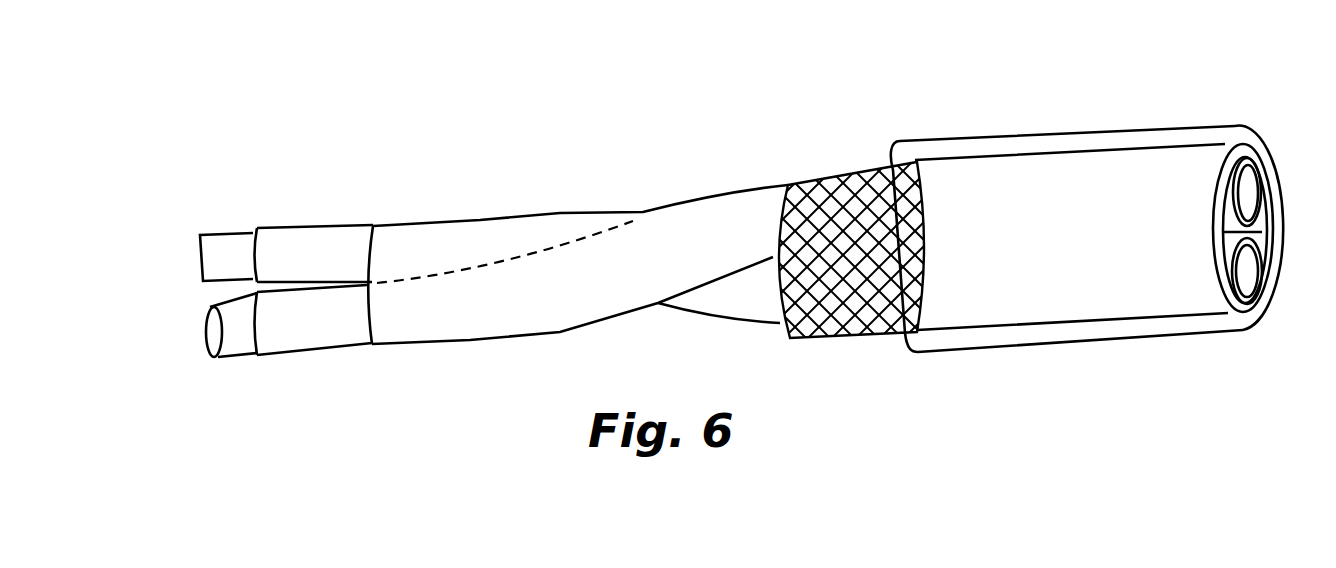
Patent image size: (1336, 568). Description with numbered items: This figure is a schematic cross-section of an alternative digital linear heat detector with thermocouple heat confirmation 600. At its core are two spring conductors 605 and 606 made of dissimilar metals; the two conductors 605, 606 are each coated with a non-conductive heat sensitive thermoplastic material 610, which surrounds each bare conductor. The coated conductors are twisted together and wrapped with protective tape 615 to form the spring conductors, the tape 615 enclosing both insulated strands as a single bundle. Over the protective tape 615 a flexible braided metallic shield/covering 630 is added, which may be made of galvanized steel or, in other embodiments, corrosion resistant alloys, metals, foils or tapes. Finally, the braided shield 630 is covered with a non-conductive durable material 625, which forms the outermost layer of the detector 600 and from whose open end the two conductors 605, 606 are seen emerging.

The digital linear heat detector with thermocouple heat confirmation 600 is at (1135, 92).
The spring conductor 605 is at (247, 227).
The spring conductor 606 is at (248, 355).
The non-conductive heat sensitive thermoplastic material 610 is at (340, 217).
The protective tape 615 is at (485, 218).
The non-conductive durable material 625 is at (1085, 127).
The flexible braided metallic shield/covering 630 is at (858, 165).